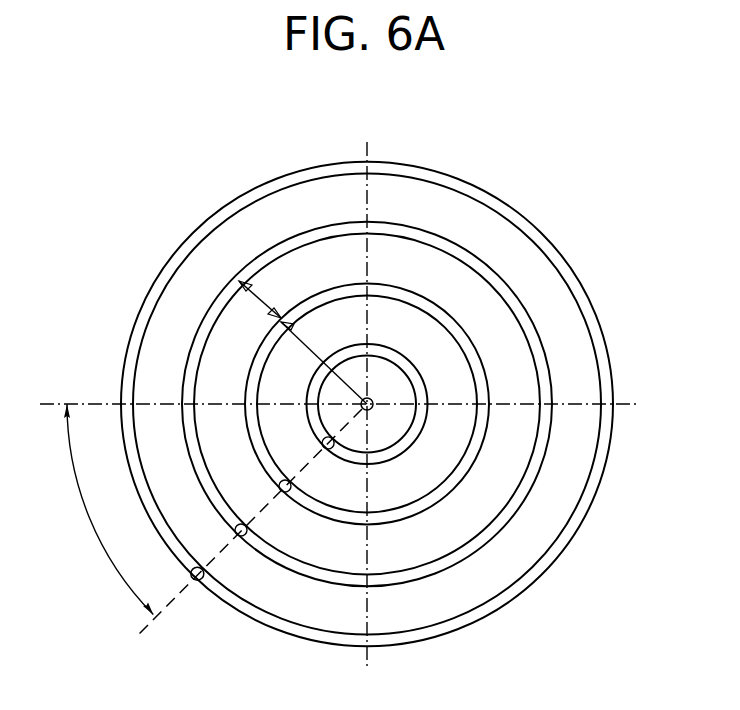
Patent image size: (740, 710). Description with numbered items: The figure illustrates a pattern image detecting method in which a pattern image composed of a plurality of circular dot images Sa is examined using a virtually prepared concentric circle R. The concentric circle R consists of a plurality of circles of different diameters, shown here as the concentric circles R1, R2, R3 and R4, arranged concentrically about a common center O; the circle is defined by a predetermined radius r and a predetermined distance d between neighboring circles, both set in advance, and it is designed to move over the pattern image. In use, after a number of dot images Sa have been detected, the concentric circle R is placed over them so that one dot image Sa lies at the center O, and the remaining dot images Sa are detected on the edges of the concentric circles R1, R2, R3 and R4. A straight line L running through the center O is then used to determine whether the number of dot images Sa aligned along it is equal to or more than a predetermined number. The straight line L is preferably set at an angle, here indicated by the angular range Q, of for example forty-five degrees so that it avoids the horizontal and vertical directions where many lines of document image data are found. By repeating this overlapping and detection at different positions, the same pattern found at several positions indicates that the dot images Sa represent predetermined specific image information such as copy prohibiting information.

The concentric circle R is at (368, 404).
The first concentric circle R1 is at (423, 428).
The second concentric circle R2 is at (472, 465).
The third concentric circle R3 is at (523, 503).
The fourth concentric circle R4 is at (568, 543).
The center of the concentric circle O is at (378, 415).
The straight line L is at (241, 534).
The angular range Q is at (108, 509).
The dot image Sa is at (198, 581).
The distance d is at (260, 298).
The radius r is at (324, 363).